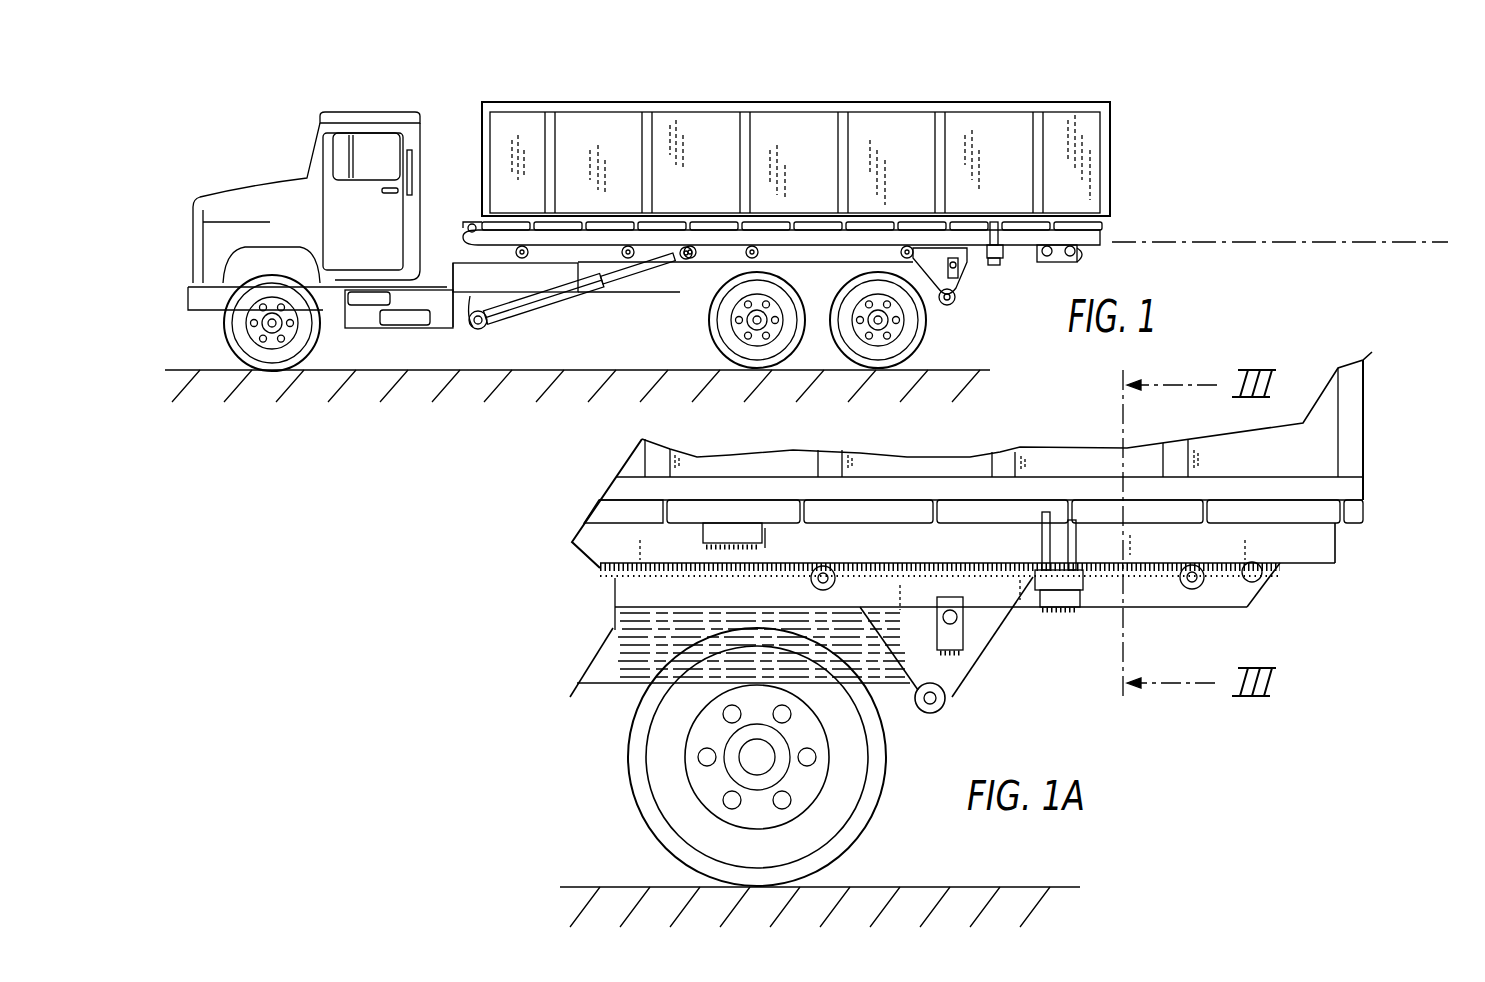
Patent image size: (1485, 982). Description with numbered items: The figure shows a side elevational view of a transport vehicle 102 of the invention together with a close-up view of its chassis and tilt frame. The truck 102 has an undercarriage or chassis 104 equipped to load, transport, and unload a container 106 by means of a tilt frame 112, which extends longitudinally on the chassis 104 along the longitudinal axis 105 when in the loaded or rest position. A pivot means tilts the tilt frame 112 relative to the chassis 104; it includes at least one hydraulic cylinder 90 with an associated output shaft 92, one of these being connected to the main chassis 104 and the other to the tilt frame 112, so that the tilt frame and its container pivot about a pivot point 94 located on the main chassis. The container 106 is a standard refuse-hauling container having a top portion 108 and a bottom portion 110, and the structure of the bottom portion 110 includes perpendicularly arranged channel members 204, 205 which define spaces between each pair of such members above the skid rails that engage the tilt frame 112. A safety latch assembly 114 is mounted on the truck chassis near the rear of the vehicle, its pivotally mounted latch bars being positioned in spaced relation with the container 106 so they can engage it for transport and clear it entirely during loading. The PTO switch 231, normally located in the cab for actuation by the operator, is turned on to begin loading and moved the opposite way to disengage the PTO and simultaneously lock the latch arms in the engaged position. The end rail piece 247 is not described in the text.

In FIG. 1, the transport vehicle 102 is at (508, 93).
In FIG. 1, the chassis 104 is at (467, 252).
In FIG. 1A, the chassis 104 is at (600, 675).
In FIG. 1, the longitudinal axis 105 is at (1330, 242).
In FIG. 1, the container 106 is at (850, 139).
In FIG. 1, the top portion 108 is at (1113, 105).
In FIG. 1, the bottom portion 110 is at (1112, 222).
In FIG. 1A, the bottom portion 110 is at (1019, 573).
In FIG. 1, the tilt frame 112 is at (817, 263).
In FIG. 1A, the tilt frame 112 is at (1223, 597).
In FIG. 1, the safety latch assembly 114 is at (997, 262).
In FIG. 1A, the safety latch assembly 114 is at (1057, 605).
In FIG. 1, the hydraulic cylinder 90 is at (508, 323).
In FIG. 1, the output shaft 92 is at (684, 258).
In FIG. 1, the pivot point 94 is at (977, 262).
In FIG. 1A, the channel member 204 is at (1073, 513).
In FIG. 1A, the channel member 205 is at (940, 513).
In FIG. 1A, the PTO switch 231 is at (747, 533).
In FIG. 1A, the rail end segment 247 is at (1362, 508).